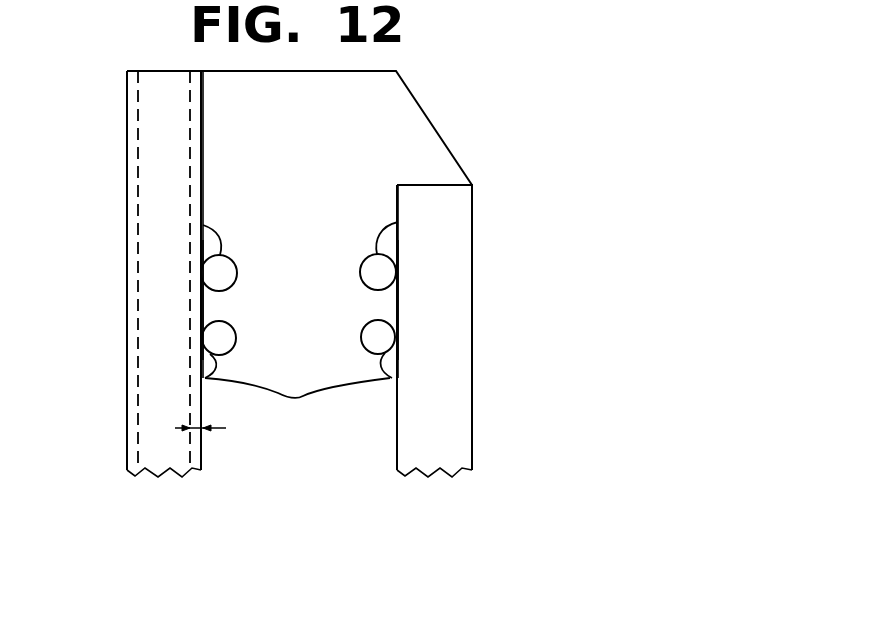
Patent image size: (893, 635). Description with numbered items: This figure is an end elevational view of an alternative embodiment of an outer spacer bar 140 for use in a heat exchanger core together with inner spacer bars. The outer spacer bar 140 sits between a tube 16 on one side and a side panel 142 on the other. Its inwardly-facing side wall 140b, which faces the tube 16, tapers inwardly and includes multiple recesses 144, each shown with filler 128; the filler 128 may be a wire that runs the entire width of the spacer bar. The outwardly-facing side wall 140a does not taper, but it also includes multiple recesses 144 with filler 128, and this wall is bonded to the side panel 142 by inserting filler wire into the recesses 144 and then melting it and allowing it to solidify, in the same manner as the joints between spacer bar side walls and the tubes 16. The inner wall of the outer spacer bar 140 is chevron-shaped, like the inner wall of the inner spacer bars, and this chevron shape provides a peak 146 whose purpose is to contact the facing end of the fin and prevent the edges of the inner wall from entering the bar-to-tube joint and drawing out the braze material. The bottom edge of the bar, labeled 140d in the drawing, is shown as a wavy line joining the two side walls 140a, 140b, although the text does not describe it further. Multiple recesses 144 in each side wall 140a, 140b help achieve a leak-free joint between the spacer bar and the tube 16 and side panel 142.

The tube 16 is at (153, 120).
The outer spacer bar 140 is at (333, 158).
The peak 146 is at (415, 138).
The side panel 142 is at (452, 238).
The filler 128 is at (218, 275).
The recesses 144 is at (205, 228).
The outwardly-facing side wall 140a is at (399, 300).
The inwardly-facing side wall 140b is at (201, 300).
The bottom edge of plate 140d is at (343, 384).